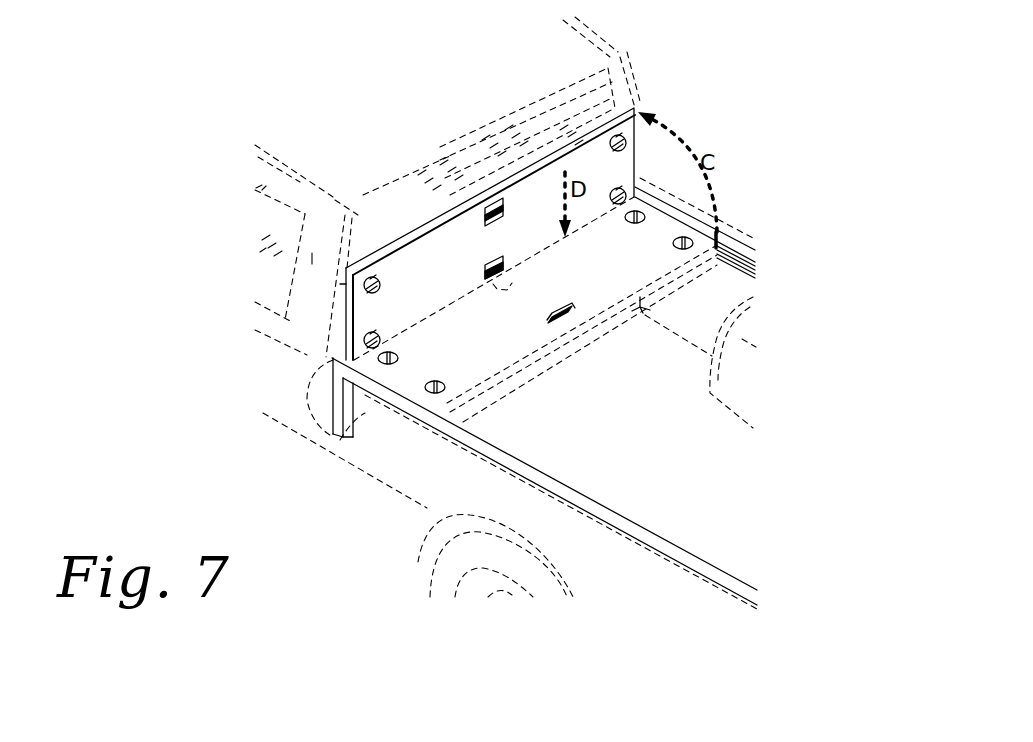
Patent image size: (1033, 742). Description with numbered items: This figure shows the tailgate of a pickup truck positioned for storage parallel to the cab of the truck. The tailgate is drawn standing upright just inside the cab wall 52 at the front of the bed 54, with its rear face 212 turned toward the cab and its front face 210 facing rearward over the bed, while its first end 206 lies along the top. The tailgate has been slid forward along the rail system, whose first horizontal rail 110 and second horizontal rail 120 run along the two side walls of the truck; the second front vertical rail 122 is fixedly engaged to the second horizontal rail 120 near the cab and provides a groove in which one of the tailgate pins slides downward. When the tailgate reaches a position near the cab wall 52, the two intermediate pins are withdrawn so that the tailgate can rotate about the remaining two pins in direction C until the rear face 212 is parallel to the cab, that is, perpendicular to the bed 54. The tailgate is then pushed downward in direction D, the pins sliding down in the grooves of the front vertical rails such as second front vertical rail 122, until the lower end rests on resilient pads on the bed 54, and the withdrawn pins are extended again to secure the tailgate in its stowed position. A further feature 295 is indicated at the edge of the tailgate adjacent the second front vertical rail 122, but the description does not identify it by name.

The cab wall 52 is at (575, 343).
The bed 54 is at (707, 487).
The first horizontal rail 110 is at (727, 260).
The second horizontal rail 120 is at (523, 468).
The second front vertical rail 122 is at (343, 400).
The first end 206 is at (468, 200).
The front face 210 is at (465, 355).
The rear face 212 is at (527, 192).
The panel edge 295 is at (350, 284).